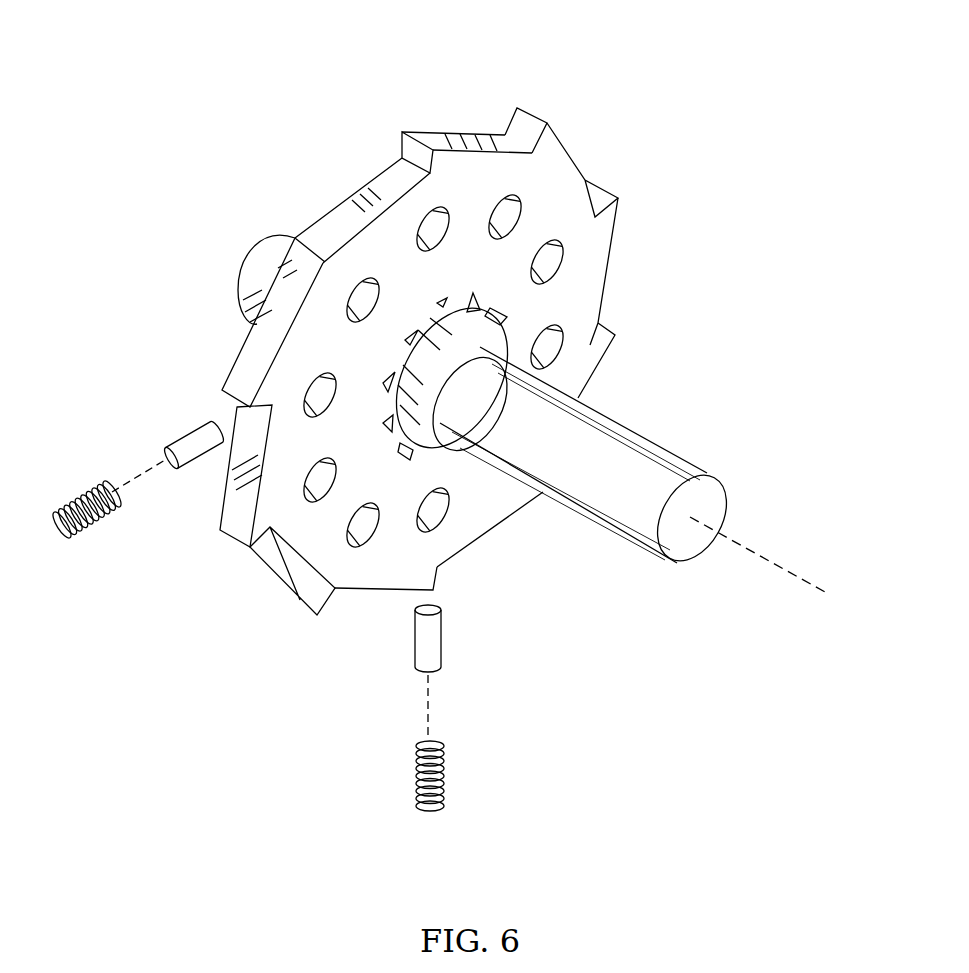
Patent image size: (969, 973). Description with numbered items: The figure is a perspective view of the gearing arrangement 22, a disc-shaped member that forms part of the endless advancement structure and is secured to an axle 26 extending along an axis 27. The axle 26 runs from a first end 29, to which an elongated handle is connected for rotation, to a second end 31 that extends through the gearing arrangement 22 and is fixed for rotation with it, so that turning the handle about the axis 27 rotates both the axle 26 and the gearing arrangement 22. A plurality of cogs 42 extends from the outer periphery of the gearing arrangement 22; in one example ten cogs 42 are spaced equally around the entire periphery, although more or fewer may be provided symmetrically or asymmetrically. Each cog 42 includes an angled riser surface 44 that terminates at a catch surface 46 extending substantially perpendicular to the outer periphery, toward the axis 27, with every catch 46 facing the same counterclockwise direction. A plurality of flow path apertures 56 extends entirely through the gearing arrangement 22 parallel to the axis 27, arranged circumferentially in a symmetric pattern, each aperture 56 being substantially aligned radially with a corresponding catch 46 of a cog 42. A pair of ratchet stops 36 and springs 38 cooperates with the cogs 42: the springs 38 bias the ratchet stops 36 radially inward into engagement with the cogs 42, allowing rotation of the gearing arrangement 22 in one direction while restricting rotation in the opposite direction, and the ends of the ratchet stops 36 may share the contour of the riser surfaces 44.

The gearing arrangement 22 is at (471, 126).
The axle 26 is at (580, 453).
The axis 27 is at (760, 562).
The first end 29 is at (613, 553).
The second end 31 is at (241, 266).
The ratchet stop 36 is at (183, 445).
The spring 38 is at (102, 515).
The cog 42 is at (325, 224).
The riser surface 44 is at (237, 380).
The catch surface 46 is at (405, 152).
The flow path aperture 56 is at (334, 460).